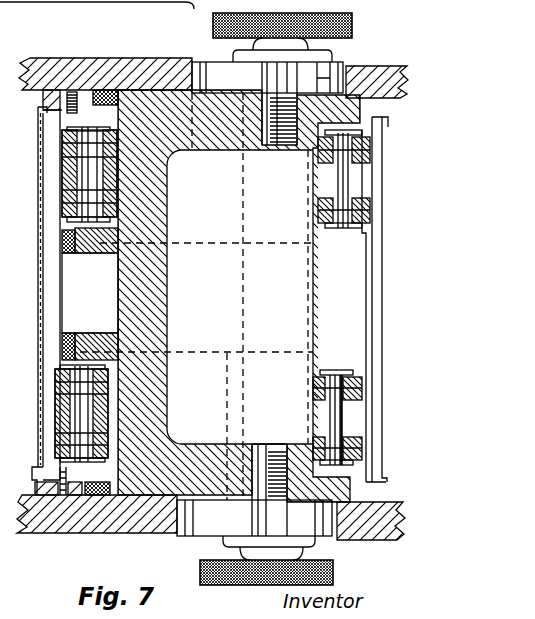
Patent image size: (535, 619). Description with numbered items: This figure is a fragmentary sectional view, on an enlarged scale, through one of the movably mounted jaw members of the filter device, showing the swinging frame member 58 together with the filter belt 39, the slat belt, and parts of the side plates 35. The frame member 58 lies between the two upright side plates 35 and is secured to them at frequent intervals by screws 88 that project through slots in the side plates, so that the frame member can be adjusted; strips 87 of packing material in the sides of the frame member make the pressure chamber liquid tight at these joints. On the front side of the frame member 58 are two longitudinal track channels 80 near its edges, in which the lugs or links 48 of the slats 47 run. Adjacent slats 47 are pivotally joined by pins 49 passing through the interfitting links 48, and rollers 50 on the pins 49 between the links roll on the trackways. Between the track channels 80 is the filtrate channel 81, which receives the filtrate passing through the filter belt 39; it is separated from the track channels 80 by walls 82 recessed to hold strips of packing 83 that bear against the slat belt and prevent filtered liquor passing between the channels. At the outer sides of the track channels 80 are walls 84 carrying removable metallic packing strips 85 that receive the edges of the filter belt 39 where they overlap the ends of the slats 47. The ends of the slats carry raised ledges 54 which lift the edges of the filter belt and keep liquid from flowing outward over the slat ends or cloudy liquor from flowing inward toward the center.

The side plate 35 is at (387, 67).
The filter belt 39 is at (42, 313).
The slat 47 is at (46, 351).
The lug 48 is at (108, 364).
The pin 49 is at (110, 388).
The roller 50 is at (110, 418).
The ledge 54 is at (44, 108).
The swinging frame member 58 is at (200, 151).
The track channel 80 is at (107, 222).
The filtrate channel 81 is at (103, 295).
The wall 82 is at (100, 245).
The strip of packing 83 is at (55, 335).
The wall 84 is at (82, 92).
The metallic packing strip 85 is at (47, 90).
The packing strip 87 is at (110, 90).
The screw 88 is at (252, 78).